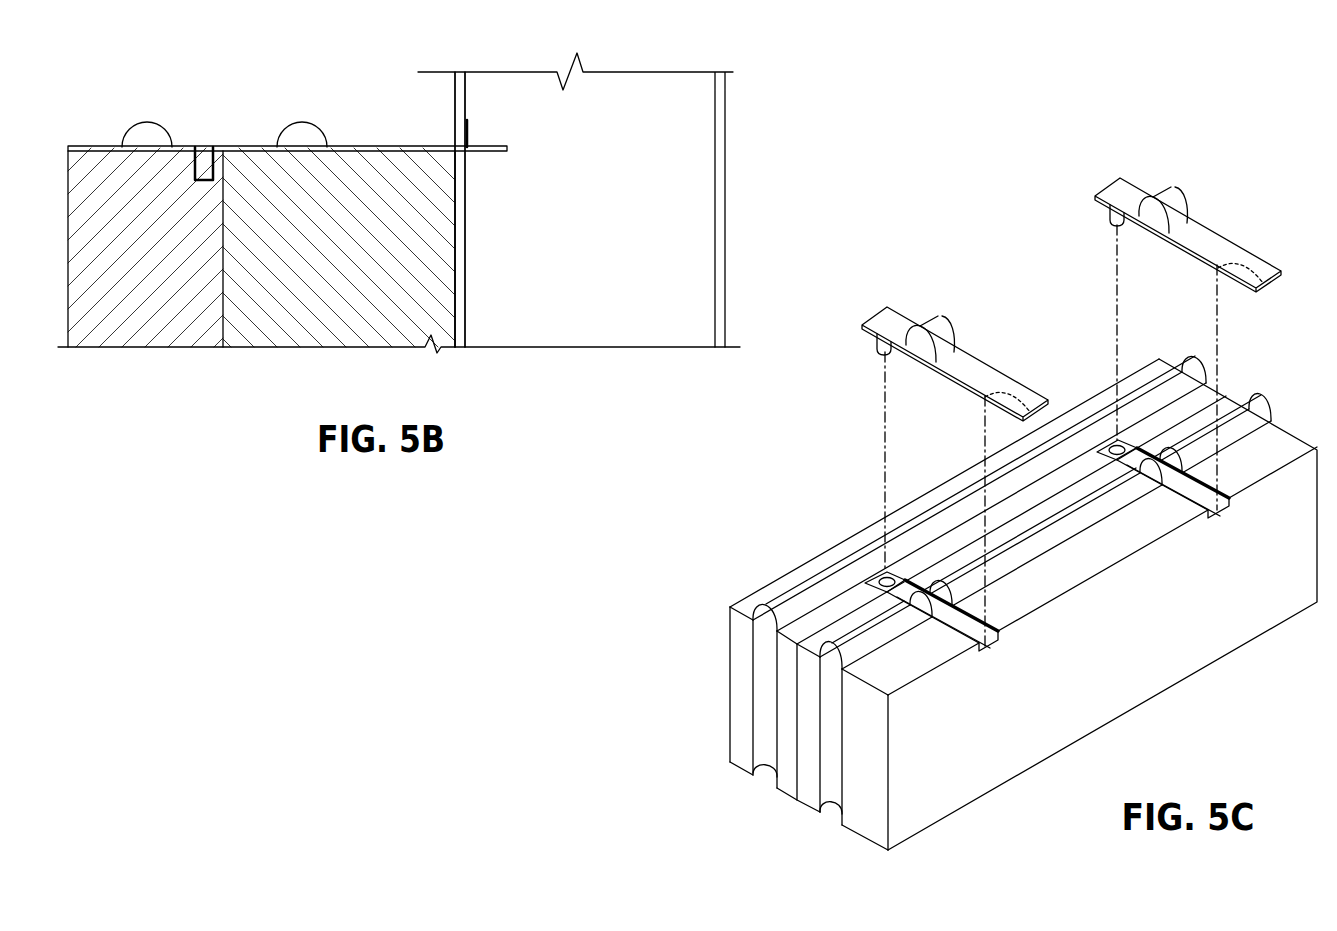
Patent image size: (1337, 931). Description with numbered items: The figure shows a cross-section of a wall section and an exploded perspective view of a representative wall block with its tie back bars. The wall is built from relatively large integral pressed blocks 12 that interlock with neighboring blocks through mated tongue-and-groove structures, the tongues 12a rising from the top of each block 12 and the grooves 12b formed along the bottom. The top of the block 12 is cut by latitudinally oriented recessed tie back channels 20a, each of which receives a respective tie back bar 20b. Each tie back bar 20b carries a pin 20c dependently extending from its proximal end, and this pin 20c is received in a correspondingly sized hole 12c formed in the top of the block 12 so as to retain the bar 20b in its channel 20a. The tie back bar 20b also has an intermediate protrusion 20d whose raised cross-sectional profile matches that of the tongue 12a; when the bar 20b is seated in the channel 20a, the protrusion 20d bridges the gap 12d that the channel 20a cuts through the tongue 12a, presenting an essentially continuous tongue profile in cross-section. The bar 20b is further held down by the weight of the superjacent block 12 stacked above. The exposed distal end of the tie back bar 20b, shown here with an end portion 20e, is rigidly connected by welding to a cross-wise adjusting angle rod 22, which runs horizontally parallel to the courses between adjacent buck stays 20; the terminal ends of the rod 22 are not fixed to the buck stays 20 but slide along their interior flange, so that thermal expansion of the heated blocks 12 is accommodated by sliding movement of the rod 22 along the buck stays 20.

In FIG. 5B, the pressed block 12 is at (309, 255).
In FIG. 5C, the pressed block 12 is at (1072, 668).
In FIG. 5C, the tongue 12a is at (1195, 447).
In FIG. 5C, the groove 12b is at (832, 742).
In FIG. 5B, the hole 12c is at (217, 183).
In FIG. 5C, the hole 12c is at (880, 578).
In FIG. 5C, the gap 12d is at (942, 608).
In FIG. 5B, the buck stay 20 is at (585, 231).
In FIG. 5C, the tie back channel 20a is at (958, 627).
In FIG. 5B, the tie back bar 20b is at (383, 148).
In FIG. 5C, the tie back bar 20b is at (983, 378).
In FIG. 5B, the pin 20c is at (183, 168).
In FIG. 5C, the pin 20c is at (887, 343).
In FIG. 5B, the intermediate protrusion 20d is at (302, 146).
In FIG. 5C, the intermediate protrusion 20d is at (937, 340).
In FIG. 5B, the tab 20e is at (498, 153).
In FIG. 5C, the tab 20e is at (985, 397).
In FIG. 5B, the adjusting angle rod 22 is at (467, 137).